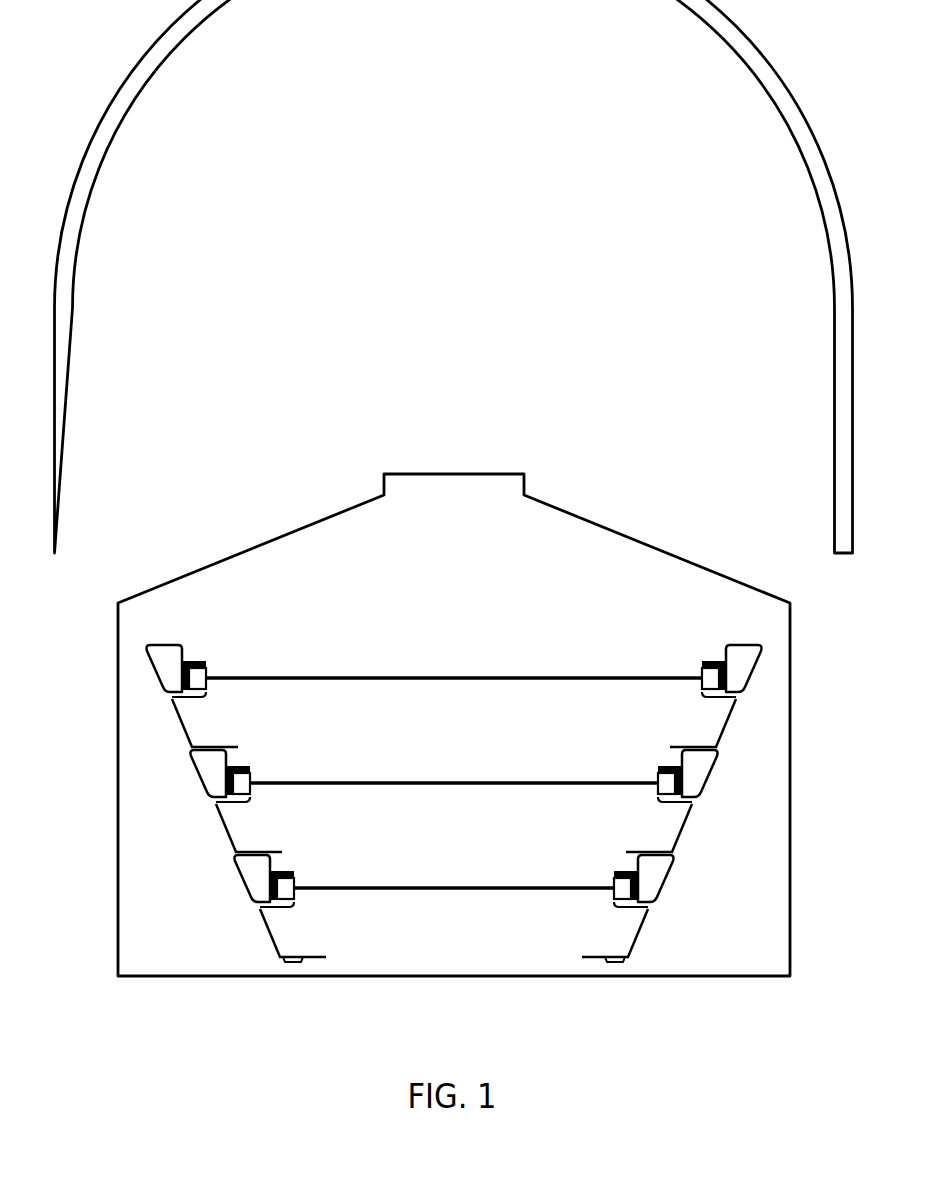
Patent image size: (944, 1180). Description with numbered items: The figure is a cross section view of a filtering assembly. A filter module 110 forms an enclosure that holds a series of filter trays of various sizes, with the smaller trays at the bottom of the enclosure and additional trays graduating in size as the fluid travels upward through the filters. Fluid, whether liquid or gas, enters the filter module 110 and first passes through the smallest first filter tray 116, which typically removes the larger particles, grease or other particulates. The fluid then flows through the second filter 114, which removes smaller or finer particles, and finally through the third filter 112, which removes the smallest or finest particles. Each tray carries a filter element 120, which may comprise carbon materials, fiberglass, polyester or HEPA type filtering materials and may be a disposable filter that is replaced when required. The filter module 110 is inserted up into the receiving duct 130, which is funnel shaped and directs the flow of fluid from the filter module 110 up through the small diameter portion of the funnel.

The filter module 110 is at (118, 807).
The third filter 112 is at (750, 672).
The second filter 114 is at (708, 770).
The first filter tray 116 is at (667, 872).
The filter element 120 is at (347, 678).
The receiving duct 130 is at (763, 57).